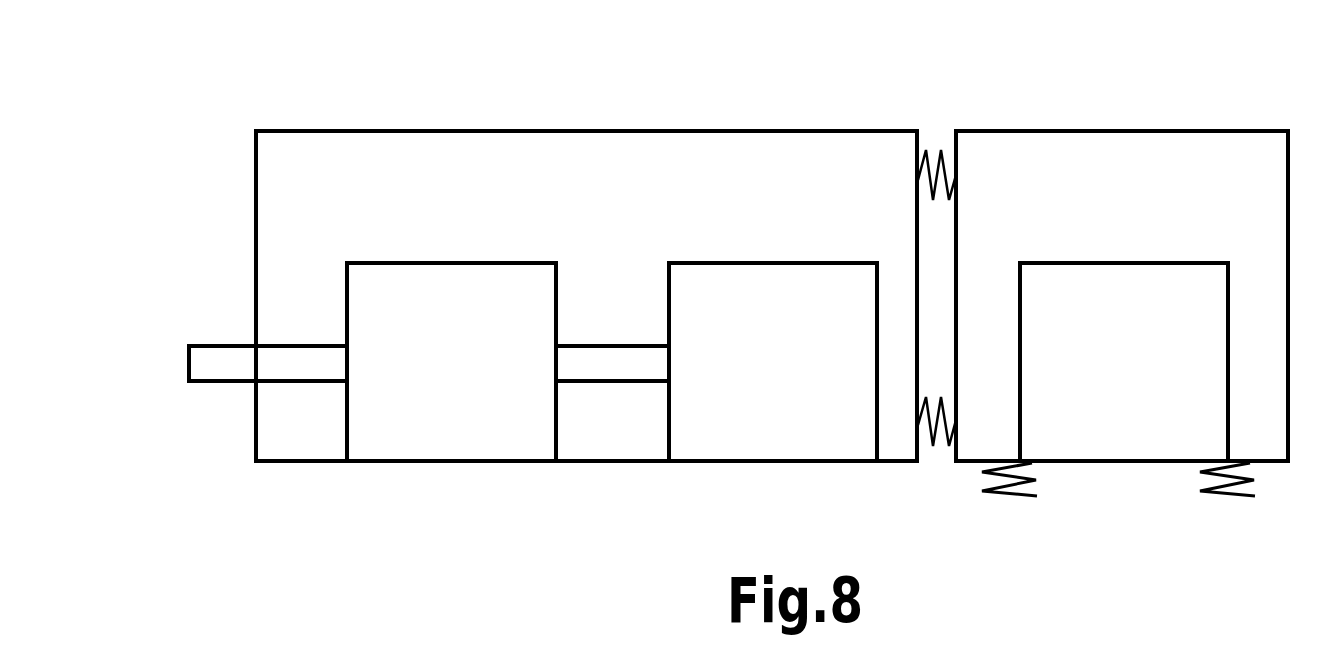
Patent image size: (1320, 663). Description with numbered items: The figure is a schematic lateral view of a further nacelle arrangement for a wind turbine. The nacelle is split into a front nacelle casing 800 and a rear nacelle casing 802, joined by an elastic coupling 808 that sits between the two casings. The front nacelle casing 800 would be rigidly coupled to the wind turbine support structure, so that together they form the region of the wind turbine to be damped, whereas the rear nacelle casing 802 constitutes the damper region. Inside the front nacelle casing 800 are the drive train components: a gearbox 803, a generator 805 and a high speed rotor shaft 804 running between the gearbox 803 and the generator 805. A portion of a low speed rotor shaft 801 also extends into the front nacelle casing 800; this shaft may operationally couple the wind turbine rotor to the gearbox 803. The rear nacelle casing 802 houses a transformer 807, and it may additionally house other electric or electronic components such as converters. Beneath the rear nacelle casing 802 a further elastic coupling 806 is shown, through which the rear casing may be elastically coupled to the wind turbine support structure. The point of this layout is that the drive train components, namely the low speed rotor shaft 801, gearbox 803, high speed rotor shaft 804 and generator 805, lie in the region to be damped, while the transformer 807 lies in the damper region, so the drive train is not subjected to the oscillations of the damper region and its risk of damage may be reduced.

The front nacelle casing 800 is at (600, 170).
The low speed rotor shaft 801 is at (222, 365).
The rear nacelle casing 802 is at (1228, 170).
The gearbox 803 is at (480, 300).
The high speed rotor shaft 804 is at (637, 355).
The generator 805 is at (762, 300).
The elastic coupling 806 is at (1033, 487).
The transformer 807 is at (1112, 300).
The elastic coupling 808 is at (935, 140).